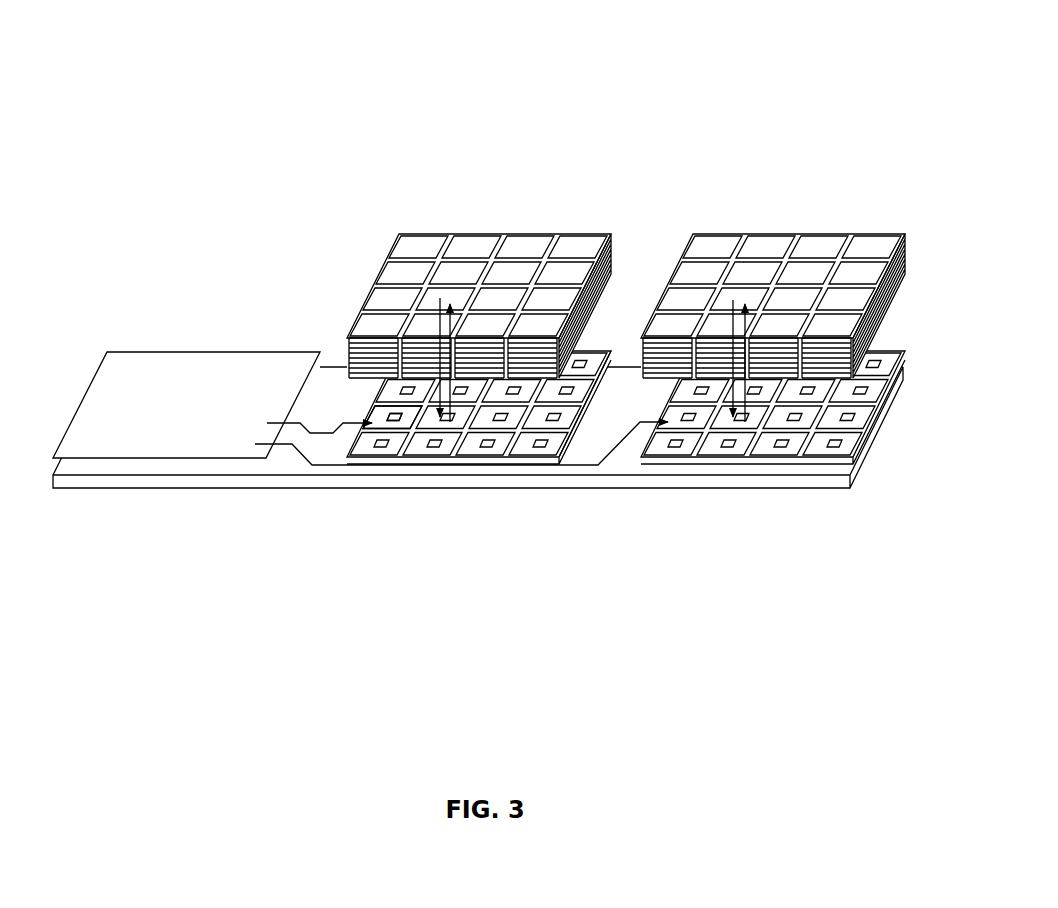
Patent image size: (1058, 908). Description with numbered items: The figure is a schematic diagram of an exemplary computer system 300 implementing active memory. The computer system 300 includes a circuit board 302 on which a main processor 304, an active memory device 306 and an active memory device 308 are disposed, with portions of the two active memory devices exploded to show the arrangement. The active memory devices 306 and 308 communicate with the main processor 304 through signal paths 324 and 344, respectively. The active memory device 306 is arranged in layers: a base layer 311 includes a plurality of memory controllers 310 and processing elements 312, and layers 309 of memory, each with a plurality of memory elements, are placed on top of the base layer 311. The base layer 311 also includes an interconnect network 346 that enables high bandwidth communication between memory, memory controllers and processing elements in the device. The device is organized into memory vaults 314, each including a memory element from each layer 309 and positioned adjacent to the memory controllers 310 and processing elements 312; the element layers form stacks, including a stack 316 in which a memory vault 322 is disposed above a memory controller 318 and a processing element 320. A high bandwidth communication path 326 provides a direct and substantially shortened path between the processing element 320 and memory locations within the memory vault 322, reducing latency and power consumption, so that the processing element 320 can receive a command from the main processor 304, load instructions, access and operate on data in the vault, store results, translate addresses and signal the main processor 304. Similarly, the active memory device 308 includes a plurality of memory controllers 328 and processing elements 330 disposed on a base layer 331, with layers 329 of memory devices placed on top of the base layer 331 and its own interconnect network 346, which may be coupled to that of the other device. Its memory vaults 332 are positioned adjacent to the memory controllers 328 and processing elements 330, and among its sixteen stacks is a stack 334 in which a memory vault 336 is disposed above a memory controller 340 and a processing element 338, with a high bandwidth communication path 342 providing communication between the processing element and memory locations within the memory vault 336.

The computer system 300 is at (375, 95).
The circuit board 302 is at (208, 485).
The main processor 304 is at (166, 415).
The active memory device 306 is at (412, 337).
The active memory device 308 is at (764, 346).
The layers 309 is at (345, 337).
The memory controllers 310 is at (486, 447).
The base layer 311 is at (438, 475).
The processing elements 312 is at (540, 447).
The memory vaults 314 is at (585, 270).
The stack 316 is at (417, 301).
The memory controller 318 is at (450, 422).
The processing element 320 is at (457, 425).
The memory vault 322 is at (430, 297).
The signal path 324 is at (342, 422).
The high bandwidth communication path 326 is at (435, 319).
The memory controllers 328 is at (780, 447).
The layers 329 is at (905, 232).
The processing elements 330 is at (833, 447).
The base layer 331 is at (775, 495).
The memory vaults 332 is at (877, 245).
The stack 334 is at (747, 291).
The memory vault 336 is at (730, 300).
The processing element 338 is at (745, 423).
The memory controller 340 is at (737, 423).
The high bandwidth communication path 342 is at (727, 319).
The signal path 344 is at (325, 465).
The interconnect network 346 is at (673, 458).